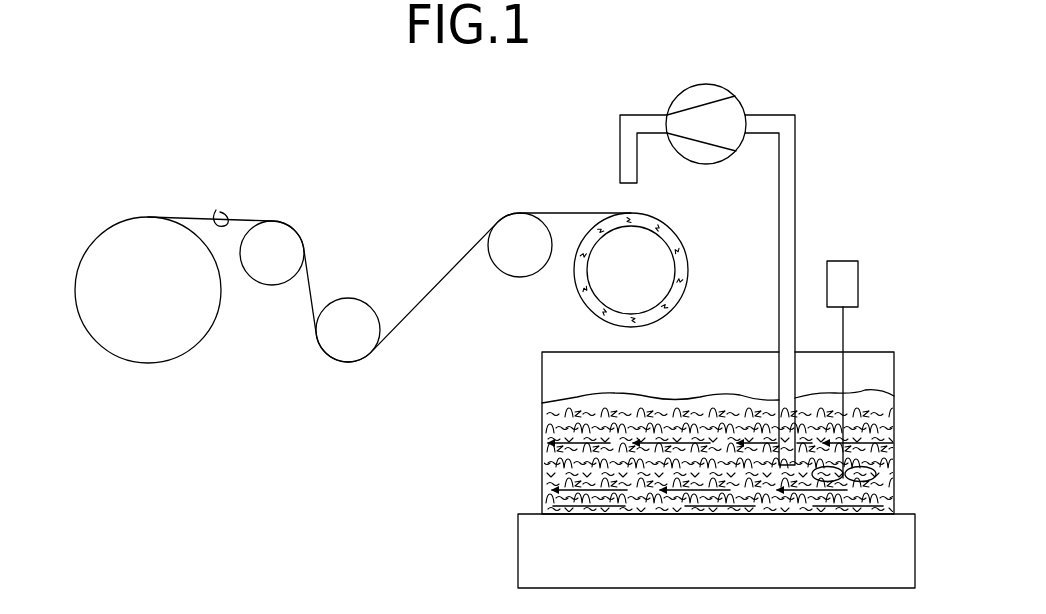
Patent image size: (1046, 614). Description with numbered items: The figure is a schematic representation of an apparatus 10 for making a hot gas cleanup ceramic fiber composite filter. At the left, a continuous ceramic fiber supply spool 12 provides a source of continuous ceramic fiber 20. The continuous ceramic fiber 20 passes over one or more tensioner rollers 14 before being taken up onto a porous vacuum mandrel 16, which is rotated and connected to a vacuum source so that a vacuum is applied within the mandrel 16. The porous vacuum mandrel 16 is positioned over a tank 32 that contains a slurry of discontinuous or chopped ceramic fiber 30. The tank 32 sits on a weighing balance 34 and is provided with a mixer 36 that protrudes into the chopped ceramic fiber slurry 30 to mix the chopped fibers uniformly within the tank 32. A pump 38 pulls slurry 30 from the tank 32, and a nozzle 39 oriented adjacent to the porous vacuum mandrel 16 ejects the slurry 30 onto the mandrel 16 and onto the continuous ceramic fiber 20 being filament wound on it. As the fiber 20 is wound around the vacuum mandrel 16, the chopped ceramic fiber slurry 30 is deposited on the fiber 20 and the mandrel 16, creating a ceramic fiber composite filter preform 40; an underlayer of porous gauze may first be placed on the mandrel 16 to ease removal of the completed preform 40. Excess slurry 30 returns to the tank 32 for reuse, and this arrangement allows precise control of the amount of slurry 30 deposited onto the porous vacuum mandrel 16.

The apparatus 10 is at (452, 170).
The continuous ceramic fiber supply spool 12 is at (160, 308).
The tensioner rollers 14 is at (290, 237).
The porous vacuum mandrel 16 is at (643, 287).
The continuous ceramic fiber 20 is at (216, 210).
The chopped ceramic fiber slurry 30 is at (577, 405).
The tank 32 is at (540, 373).
The weighing balance 34 is at (517, 550).
The mixer 36 is at (858, 280).
The pump 38 is at (712, 93).
The nozzle 39 is at (627, 185).
The ceramic fiber composite filter preform 40 is at (685, 270).